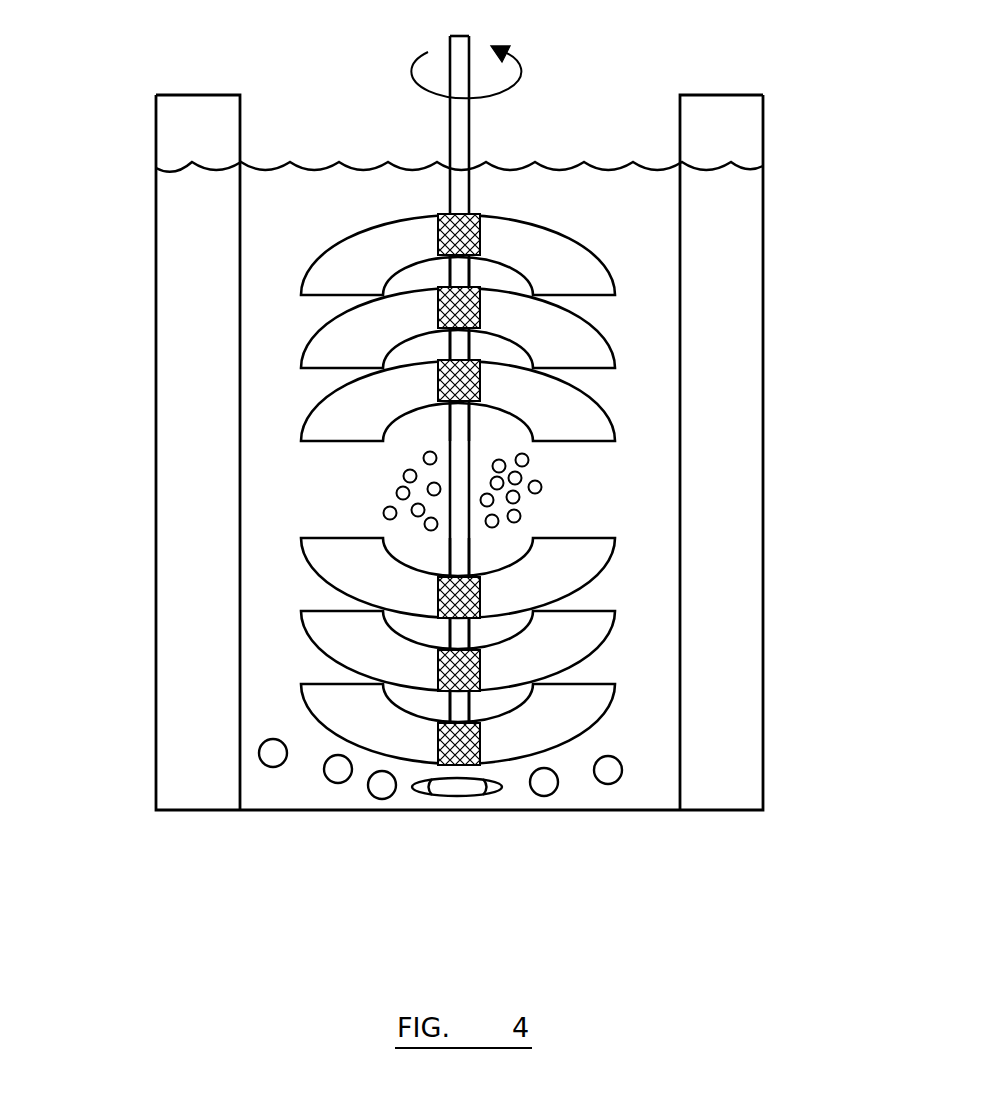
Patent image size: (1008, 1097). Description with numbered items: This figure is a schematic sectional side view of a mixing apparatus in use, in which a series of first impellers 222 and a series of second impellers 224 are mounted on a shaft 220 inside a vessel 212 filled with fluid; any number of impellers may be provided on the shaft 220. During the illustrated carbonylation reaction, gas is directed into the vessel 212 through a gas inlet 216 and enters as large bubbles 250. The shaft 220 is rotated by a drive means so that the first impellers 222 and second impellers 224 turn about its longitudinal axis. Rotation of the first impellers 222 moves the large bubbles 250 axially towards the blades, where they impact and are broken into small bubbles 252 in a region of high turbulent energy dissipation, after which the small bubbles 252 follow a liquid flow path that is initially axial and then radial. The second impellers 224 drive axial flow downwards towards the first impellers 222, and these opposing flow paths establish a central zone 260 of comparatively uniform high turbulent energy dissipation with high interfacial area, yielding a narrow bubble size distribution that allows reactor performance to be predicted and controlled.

The vessel 212 is at (763, 348).
The gas inlet 216 is at (458, 790).
The shaft 220 is at (455, 129).
The first impellers 222 is at (335, 634).
The second impellers 224 is at (563, 256).
The large bubbles 250 is at (332, 782).
The small bubbles 252 is at (519, 497).
The central zone 260 is at (384, 488).